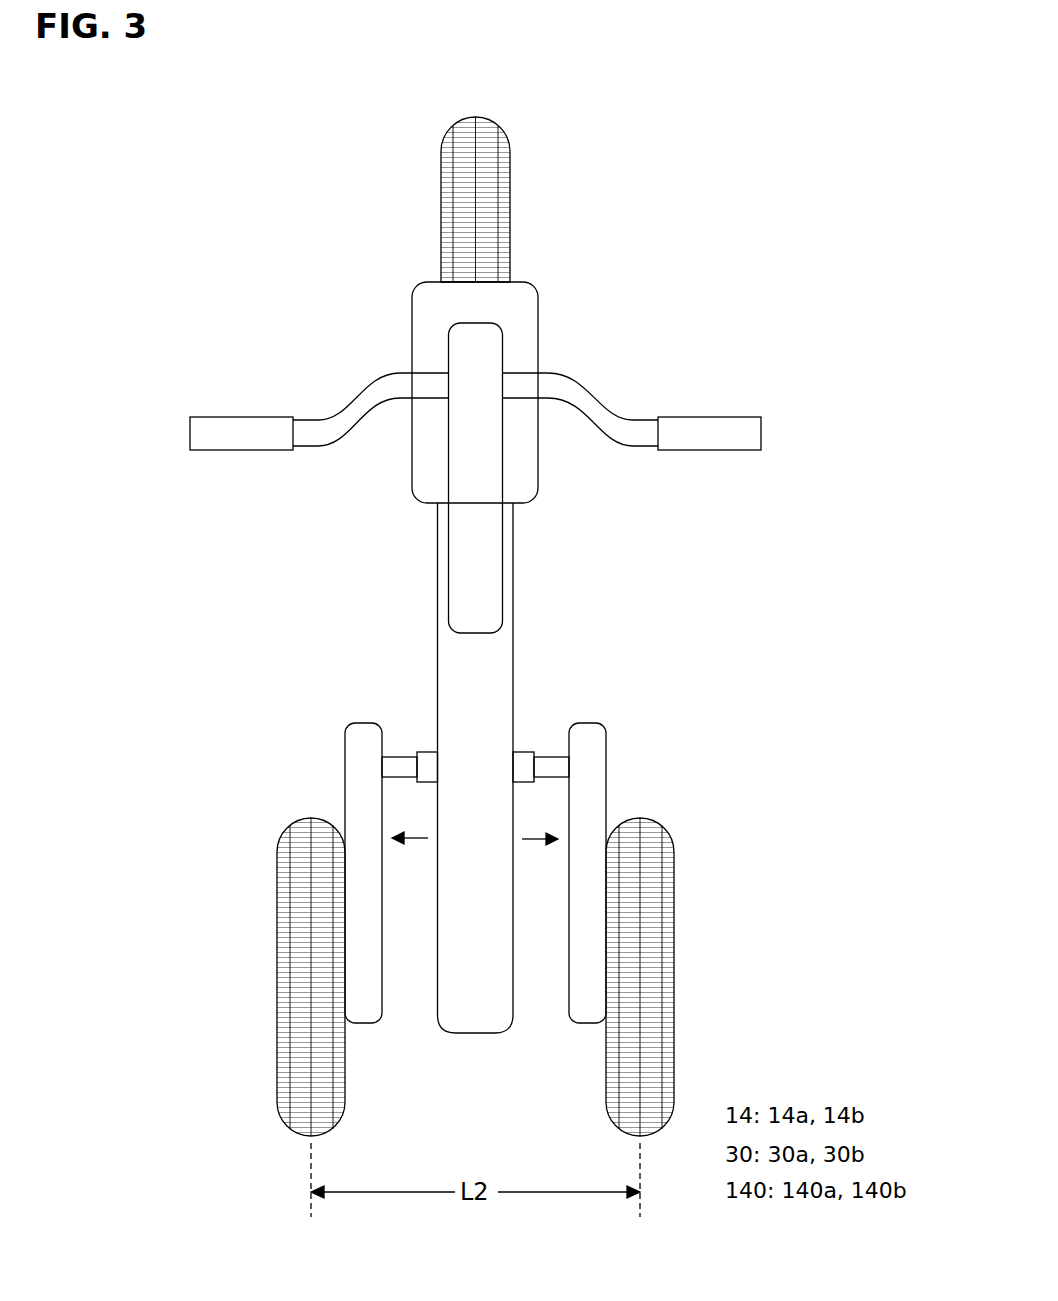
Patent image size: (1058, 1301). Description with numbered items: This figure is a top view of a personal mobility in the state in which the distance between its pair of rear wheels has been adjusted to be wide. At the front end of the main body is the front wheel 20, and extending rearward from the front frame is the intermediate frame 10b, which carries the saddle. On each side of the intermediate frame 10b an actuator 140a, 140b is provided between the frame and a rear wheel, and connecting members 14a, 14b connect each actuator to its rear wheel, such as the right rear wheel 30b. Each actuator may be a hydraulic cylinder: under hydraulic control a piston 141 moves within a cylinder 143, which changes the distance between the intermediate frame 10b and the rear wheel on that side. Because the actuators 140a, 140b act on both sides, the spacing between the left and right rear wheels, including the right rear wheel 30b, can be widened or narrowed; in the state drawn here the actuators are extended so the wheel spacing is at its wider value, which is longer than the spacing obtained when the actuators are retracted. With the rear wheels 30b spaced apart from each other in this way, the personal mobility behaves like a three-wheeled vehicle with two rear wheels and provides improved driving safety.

The front wheel 20 is at (497, 177).
The intermediate frame 10b is at (452, 656).
The connecting member 14a is at (358, 779).
The connecting member 14b is at (595, 791).
The actuator 140a is at (400, 742).
The actuator 140b is at (556, 742).
The piston 141 is at (560, 767).
The cylinder 143 is at (525, 762).
The right rear wheel 30b is at (296, 887).